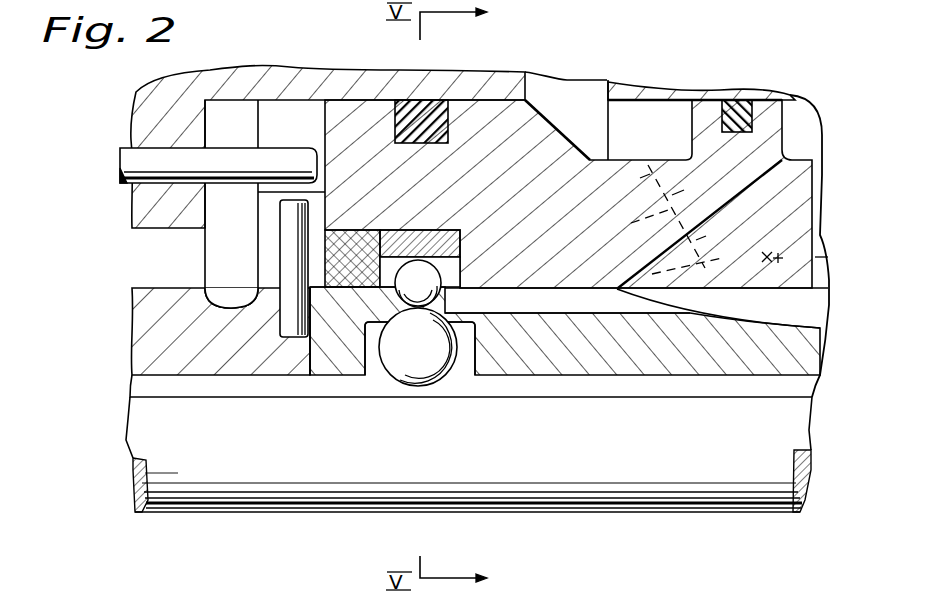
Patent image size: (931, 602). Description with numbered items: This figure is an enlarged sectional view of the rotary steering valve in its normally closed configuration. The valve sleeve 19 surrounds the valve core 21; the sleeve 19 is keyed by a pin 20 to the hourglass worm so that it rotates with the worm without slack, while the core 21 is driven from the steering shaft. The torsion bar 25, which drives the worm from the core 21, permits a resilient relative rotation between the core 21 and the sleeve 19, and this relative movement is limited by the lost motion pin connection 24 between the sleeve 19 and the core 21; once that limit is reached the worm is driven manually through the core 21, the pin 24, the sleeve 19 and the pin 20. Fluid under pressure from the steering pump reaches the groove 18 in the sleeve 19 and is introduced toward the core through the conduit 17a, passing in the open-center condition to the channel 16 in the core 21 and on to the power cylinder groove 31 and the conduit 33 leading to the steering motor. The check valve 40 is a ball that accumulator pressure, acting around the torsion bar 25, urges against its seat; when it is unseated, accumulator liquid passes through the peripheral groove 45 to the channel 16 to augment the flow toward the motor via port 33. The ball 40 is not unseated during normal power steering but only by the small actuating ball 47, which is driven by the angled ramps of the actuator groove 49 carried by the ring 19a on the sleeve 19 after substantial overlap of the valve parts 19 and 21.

The channel 16 is at (816, 322).
The conduit 17a is at (823, 172).
The groove 18 is at (784, 106).
The valve sleeve 19 is at (538, 141).
The ring 19a is at (425, 229).
The pin 20 is at (278, 158).
The valve core 21 is at (534, 357).
The lost motion pin connection 24 is at (285, 228).
The torsion bar 25 is at (678, 498).
The power cylinder groove 31 is at (568, 194).
The conduit 33 is at (689, 219).
The check valve 40 is at (400, 355).
The peripheral groove 45 is at (534, 313).
The actuating ball 47 is at (443, 293).
The actuator groove 49 is at (397, 266).